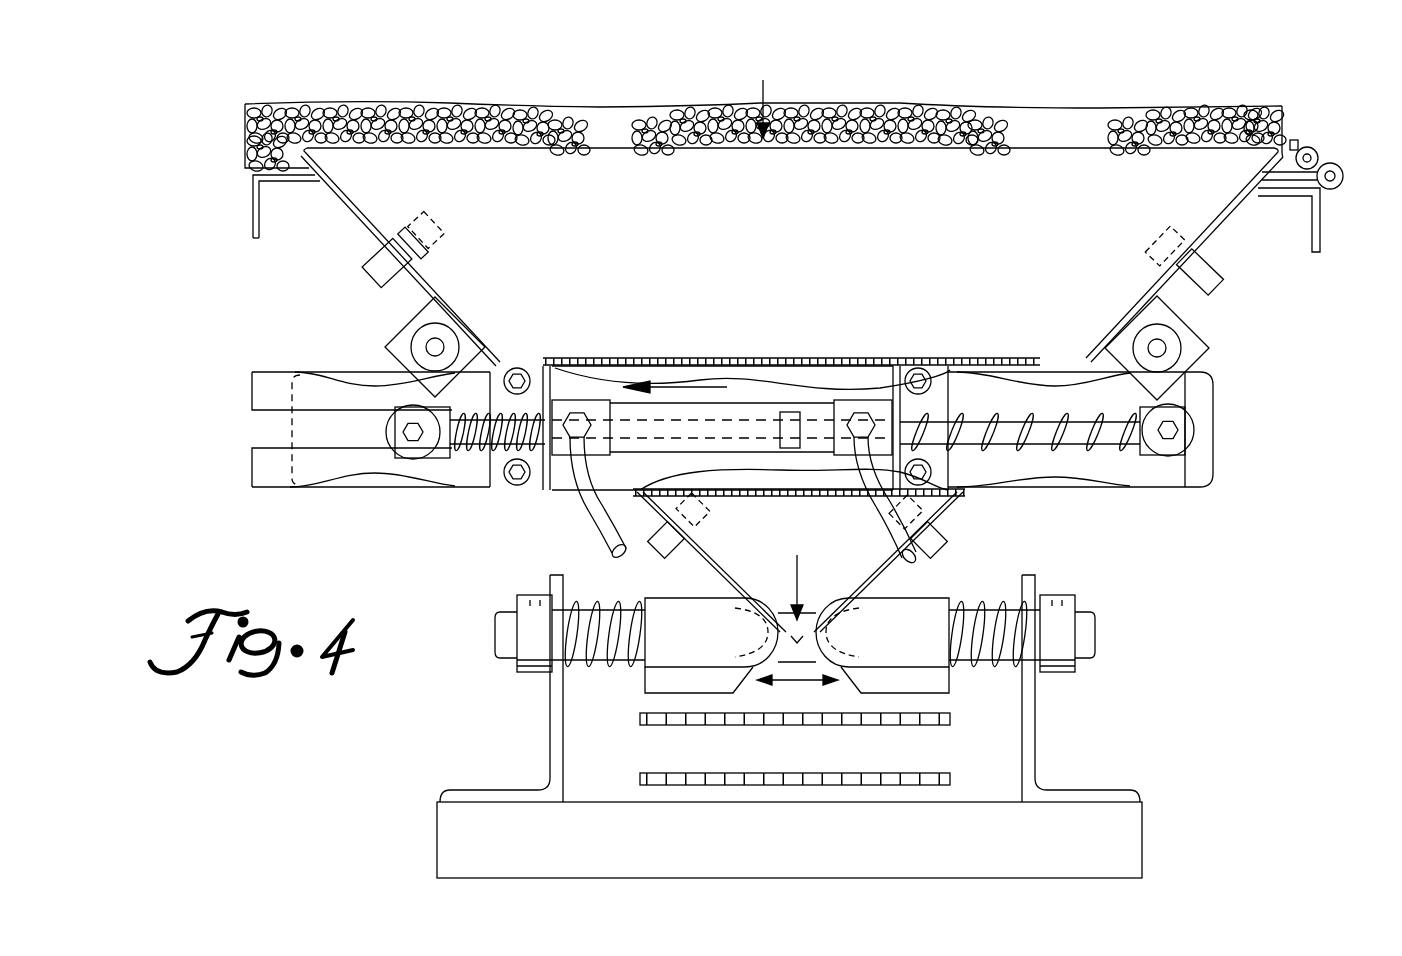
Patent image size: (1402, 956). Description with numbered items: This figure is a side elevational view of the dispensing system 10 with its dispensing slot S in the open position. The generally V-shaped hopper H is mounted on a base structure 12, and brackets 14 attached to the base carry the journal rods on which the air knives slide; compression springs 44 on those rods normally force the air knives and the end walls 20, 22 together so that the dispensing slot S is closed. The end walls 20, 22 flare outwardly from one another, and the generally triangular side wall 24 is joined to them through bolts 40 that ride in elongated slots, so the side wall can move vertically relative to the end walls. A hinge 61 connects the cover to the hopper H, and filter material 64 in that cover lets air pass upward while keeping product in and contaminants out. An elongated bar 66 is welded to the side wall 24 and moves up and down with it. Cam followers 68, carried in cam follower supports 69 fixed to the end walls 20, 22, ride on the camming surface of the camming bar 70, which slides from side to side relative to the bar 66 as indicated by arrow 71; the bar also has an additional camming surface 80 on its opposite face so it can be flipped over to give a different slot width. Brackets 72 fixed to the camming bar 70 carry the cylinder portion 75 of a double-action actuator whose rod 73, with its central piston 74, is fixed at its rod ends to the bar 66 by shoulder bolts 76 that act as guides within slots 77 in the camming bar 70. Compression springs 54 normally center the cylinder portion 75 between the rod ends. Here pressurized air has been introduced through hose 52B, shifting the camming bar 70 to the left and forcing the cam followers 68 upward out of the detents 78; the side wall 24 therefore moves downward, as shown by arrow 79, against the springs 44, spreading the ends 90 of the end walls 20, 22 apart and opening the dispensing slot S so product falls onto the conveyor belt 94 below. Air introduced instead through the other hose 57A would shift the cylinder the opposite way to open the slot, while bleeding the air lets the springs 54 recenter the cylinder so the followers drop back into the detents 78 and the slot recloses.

The feeder apparatus 10 is at (419, 86).
The base structure 12 is at (1118, 833).
The brackets 14 is at (1035, 736).
The end wall 20 is at (345, 208).
The end wall 22 is at (1165, 290).
The side wall 24 is at (1207, 212).
The bolts 40 is at (383, 278).
The compression springs 44 is at (993, 606).
The hose 52B is at (872, 507).
The compression springs 54 is at (1090, 443).
The hydraulic hose 57A is at (592, 516).
The hinge 61 is at (1328, 148).
The filter material 64 is at (850, 128).
The elongated bar 66 is at (1213, 388).
The cam followers 68 is at (418, 335).
The cam follower supports 69 is at (385, 345).
The camming bar 70 is at (1165, 470).
The arrow 71 is at (717, 385).
The brackets 72 is at (542, 362).
The rod 73 is at (1031, 423).
The central piston 74 is at (795, 375).
The cylinder portion 75 is at (665, 400).
The shoulder bolts 76 is at (395, 433).
The slots 77 is at (255, 452).
The detents 78 is at (443, 486).
The arrow 79 is at (772, 92).
The additional camming surface 80 is at (478, 350).
The ends of end walls 90 is at (762, 638).
The conveyor belt 94 is at (922, 726).
The hopper H is at (323, 262).
The dispensing slot S is at (814, 604).